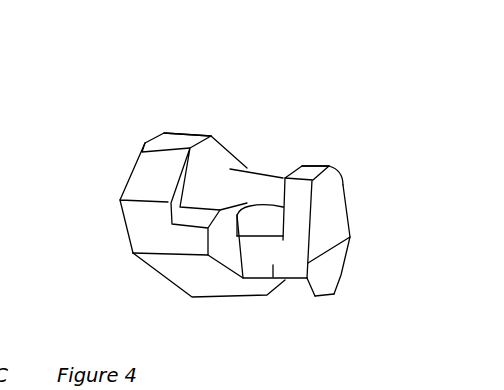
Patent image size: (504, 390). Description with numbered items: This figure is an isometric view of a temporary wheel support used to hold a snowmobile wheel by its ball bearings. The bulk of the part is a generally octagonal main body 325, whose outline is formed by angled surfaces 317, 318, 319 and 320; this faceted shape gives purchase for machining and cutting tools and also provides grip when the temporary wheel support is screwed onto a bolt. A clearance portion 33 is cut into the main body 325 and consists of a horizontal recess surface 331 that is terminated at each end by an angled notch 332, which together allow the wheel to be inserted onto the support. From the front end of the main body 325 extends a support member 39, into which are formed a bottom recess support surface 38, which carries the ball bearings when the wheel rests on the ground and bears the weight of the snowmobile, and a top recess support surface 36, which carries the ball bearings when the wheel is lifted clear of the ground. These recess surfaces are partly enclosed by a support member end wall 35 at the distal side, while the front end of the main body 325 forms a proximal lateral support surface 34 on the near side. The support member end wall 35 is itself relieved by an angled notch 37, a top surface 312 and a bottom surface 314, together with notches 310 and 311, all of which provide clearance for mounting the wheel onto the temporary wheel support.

The main body 325 is at (180, 207).
The horizontal recess surface 331 is at (253, 170).
The top recess support surface 36 is at (272, 227).
The proximal lateral support surface 34 is at (290, 167).
The top surface 312 is at (324, 165).
The support member end wall 35 is at (332, 189).
The clearance portion 33 is at (141, 142).
The angled surface 320 is at (185, 133).
The angled surface 317 is at (130, 180).
The angled surface 318 is at (143, 238).
The angled notch 332 is at (181, 209).
The angled surface 319 is at (180, 273).
The notch 311 is at (321, 207).
The angled notch 37 is at (347, 272).
The bottom surface 314 is at (315, 296).
The notch 310 is at (311, 298).
The bottom recess support surface 38 is at (292, 282).
The support member 39 is at (272, 298).